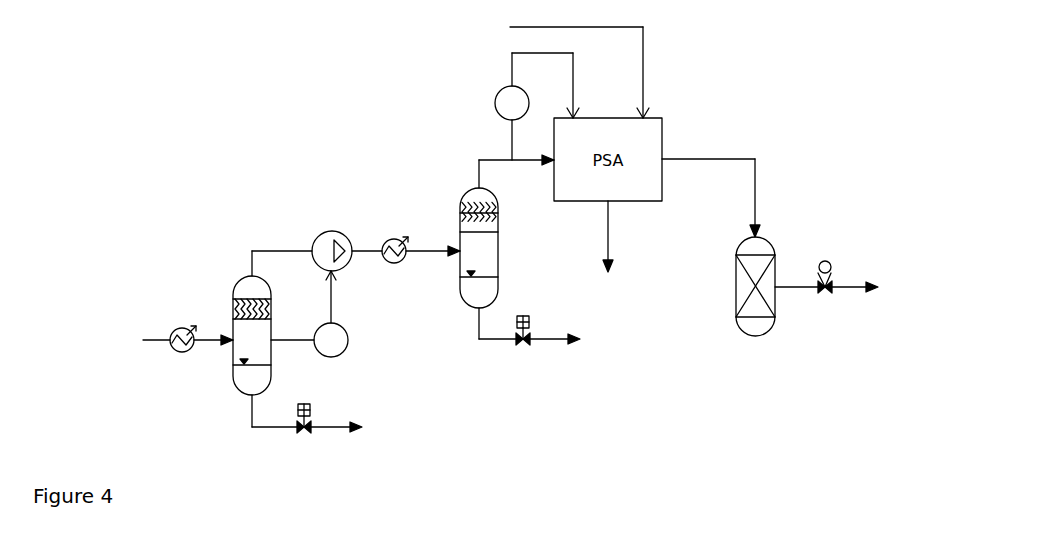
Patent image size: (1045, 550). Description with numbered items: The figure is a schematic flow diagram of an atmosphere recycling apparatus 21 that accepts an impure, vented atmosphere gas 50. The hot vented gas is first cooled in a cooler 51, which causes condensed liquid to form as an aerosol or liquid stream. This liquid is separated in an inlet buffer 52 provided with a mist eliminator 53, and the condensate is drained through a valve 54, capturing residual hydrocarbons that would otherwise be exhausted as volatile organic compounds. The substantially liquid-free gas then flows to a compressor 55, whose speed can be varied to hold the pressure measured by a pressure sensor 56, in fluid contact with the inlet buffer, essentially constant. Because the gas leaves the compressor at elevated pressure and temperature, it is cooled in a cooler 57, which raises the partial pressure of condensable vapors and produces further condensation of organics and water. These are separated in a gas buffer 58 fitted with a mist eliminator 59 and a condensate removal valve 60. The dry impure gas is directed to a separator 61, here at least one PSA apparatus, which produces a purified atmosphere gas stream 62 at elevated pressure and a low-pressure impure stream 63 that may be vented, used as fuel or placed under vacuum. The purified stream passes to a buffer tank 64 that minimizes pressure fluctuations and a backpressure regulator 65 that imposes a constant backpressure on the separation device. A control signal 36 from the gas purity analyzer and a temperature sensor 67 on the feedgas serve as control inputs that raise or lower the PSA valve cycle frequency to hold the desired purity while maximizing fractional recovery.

The atmosphere recycling apparatus 21 is at (235, 110).
The control signal 36 is at (579, 72).
The impure, vented atmosphere gas 50 is at (103, 340).
The cooler 51 is at (201, 349).
The inlet buffer 52 is at (236, 280).
The mist eliminator 53 is at (266, 306).
The valve 54 is at (307, 430).
The compressor 55 is at (332, 237).
The pressure sensor 56 is at (323, 314).
The cooler 57 is at (406, 260).
The gas buffer 58 is at (463, 194).
The mist eliminator 59 is at (497, 222).
The condensate removal valve 60 is at (529, 342).
The separator 61 is at (545, 106).
The purified atmosphere gas stream 62 is at (711, 187).
The impure stream 63 is at (609, 250).
The buffer tank 64 is at (736, 286).
The backpressure regulator 65 is at (826, 289).
The temperature sensor 67 is at (497, 103).